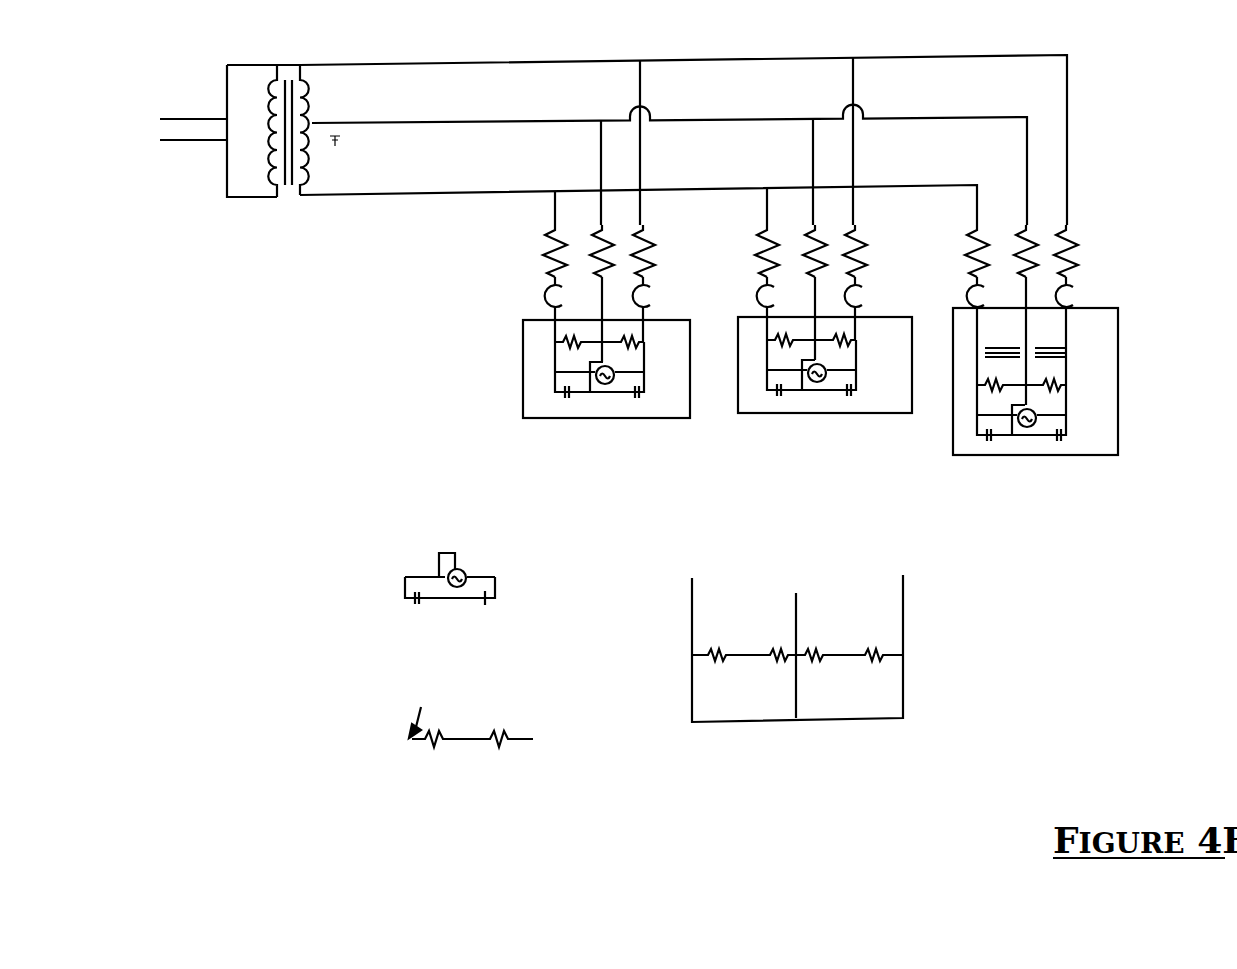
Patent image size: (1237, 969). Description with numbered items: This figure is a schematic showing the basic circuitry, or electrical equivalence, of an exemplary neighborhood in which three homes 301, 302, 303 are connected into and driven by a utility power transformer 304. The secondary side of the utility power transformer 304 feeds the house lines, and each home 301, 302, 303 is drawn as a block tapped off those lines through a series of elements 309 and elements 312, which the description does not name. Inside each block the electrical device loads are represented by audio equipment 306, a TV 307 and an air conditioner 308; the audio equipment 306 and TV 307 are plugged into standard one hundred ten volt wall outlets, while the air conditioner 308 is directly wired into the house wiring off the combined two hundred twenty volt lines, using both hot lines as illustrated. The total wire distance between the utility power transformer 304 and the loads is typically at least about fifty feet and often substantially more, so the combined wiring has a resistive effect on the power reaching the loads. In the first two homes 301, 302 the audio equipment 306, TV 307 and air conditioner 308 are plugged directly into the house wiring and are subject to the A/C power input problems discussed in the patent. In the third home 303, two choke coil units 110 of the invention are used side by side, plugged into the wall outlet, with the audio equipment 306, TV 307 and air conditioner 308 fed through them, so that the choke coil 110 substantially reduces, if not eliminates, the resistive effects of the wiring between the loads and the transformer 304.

The utility power transformer 304 is at (250, 119).
The resistor 309 is at (963, 232).
The fuse 312 is at (973, 287).
The home 301 is at (691, 453).
The home 302 is at (911, 448).
The home 303 is at (1126, 495).
The audio equipment 306 is at (925, 536).
The TV 307 is at (1110, 411).
The air conditioner 308 is at (529, 564).
The choke coil 110 is at (1110, 361).